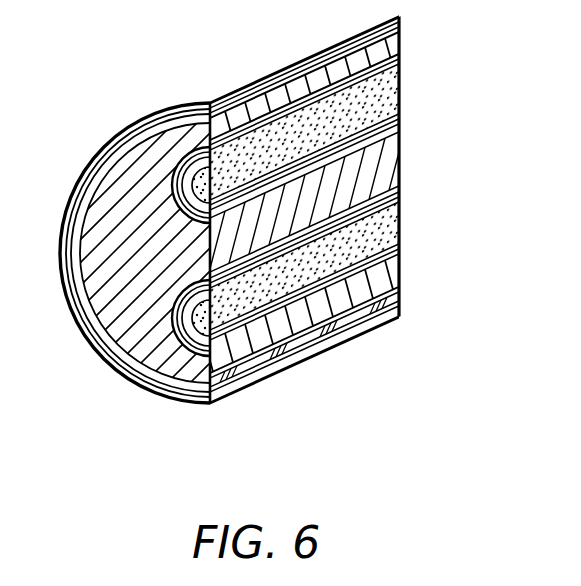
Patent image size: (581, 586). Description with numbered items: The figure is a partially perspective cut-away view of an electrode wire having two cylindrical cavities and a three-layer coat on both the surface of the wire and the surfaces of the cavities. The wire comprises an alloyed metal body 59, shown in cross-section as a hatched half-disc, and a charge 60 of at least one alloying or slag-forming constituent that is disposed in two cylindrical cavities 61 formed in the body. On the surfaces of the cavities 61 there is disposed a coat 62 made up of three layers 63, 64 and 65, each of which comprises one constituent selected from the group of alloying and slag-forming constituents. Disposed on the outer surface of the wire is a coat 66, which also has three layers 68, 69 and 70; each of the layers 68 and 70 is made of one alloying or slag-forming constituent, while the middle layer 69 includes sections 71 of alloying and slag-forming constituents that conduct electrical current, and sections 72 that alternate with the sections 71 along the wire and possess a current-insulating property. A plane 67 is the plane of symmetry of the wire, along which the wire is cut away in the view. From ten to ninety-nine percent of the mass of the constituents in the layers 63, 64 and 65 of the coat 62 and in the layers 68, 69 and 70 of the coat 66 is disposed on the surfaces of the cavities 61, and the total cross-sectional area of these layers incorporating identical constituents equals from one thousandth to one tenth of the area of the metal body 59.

The alloyed metal body 59 is at (122, 190).
The charge 60 is at (192, 183).
The cylindrical cavities 61 is at (195, 167).
The coat 62 is at (200, 147).
The layer 63 is at (400, 65).
The layer 64 is at (400, 70).
The layer 65 is at (400, 77).
The coat 66 is at (385, 292).
The plane 67 is at (400, 316).
The layer 68 is at (395, 308).
The layer 69 is at (217, 405).
The layer 70 is at (246, 388).
The sections 71 is at (376, 327).
The sections 72 is at (338, 344).